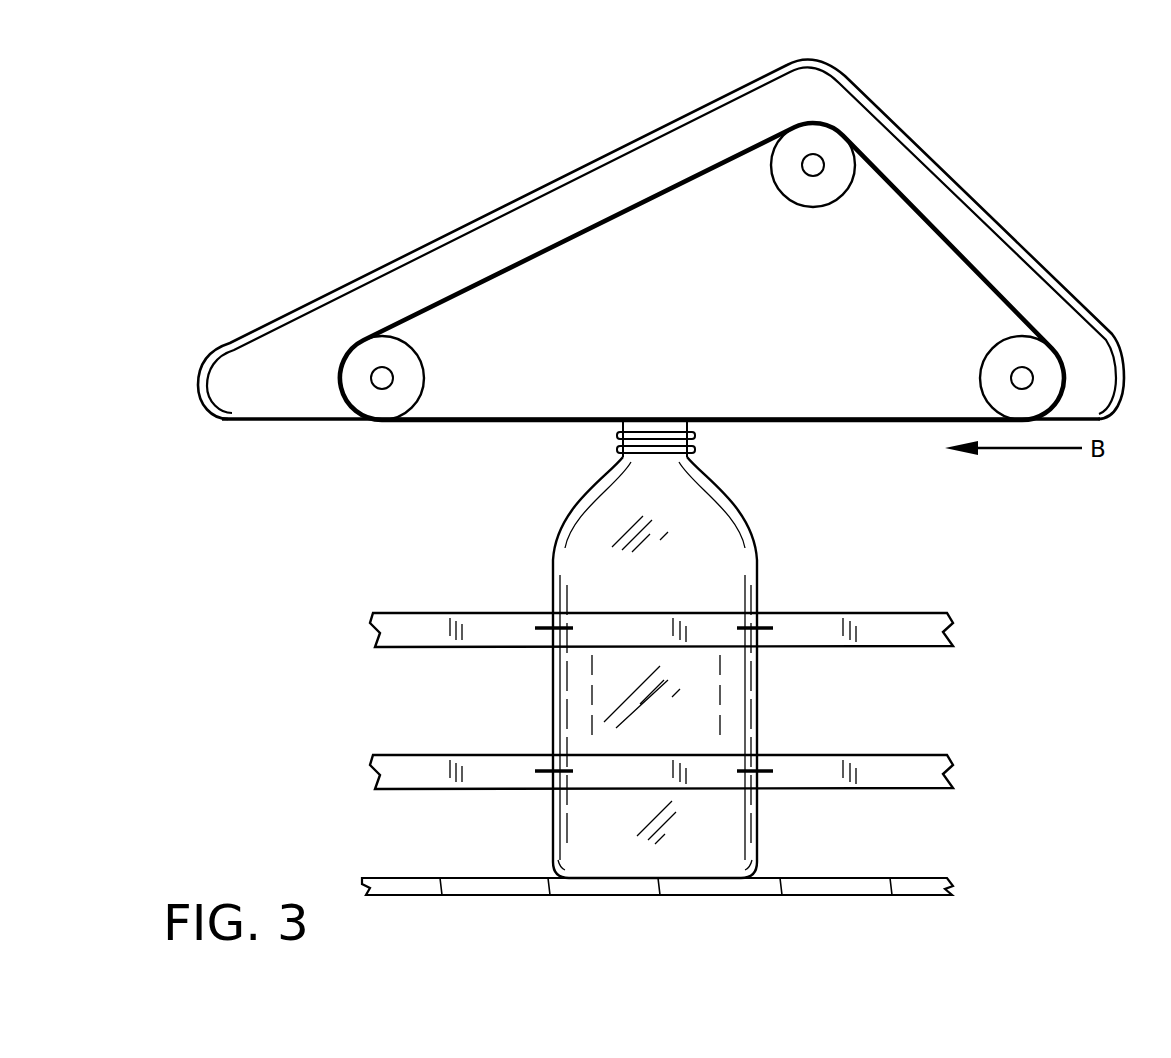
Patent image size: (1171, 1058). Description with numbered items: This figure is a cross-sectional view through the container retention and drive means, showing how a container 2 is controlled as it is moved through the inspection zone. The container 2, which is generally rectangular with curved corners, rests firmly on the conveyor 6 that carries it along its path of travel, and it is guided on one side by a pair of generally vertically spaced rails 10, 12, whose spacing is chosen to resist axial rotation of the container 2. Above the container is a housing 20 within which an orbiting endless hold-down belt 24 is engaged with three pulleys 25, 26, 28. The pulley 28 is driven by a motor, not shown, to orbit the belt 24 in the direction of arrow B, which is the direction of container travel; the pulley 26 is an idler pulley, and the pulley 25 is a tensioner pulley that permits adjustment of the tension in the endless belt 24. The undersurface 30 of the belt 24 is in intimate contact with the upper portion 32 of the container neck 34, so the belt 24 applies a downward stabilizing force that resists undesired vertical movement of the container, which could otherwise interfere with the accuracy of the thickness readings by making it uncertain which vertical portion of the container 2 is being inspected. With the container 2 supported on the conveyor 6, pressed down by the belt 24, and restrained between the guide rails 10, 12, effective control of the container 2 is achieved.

The container 2 is at (733, 543).
The conveyor 6 is at (853, 885).
The first rail 10 is at (893, 767).
The first rail 12 is at (873, 622).
The housing 20 is at (1020, 233).
The endless hold-down belt 24 is at (613, 219).
The tensioner pulley 25 is at (805, 205).
The idler pulley 26 is at (407, 381).
The pulley 28 is at (990, 383).
The undersurface 30 is at (550, 420).
The upper portion 32 is at (650, 419).
The container neck 34 is at (613, 462).